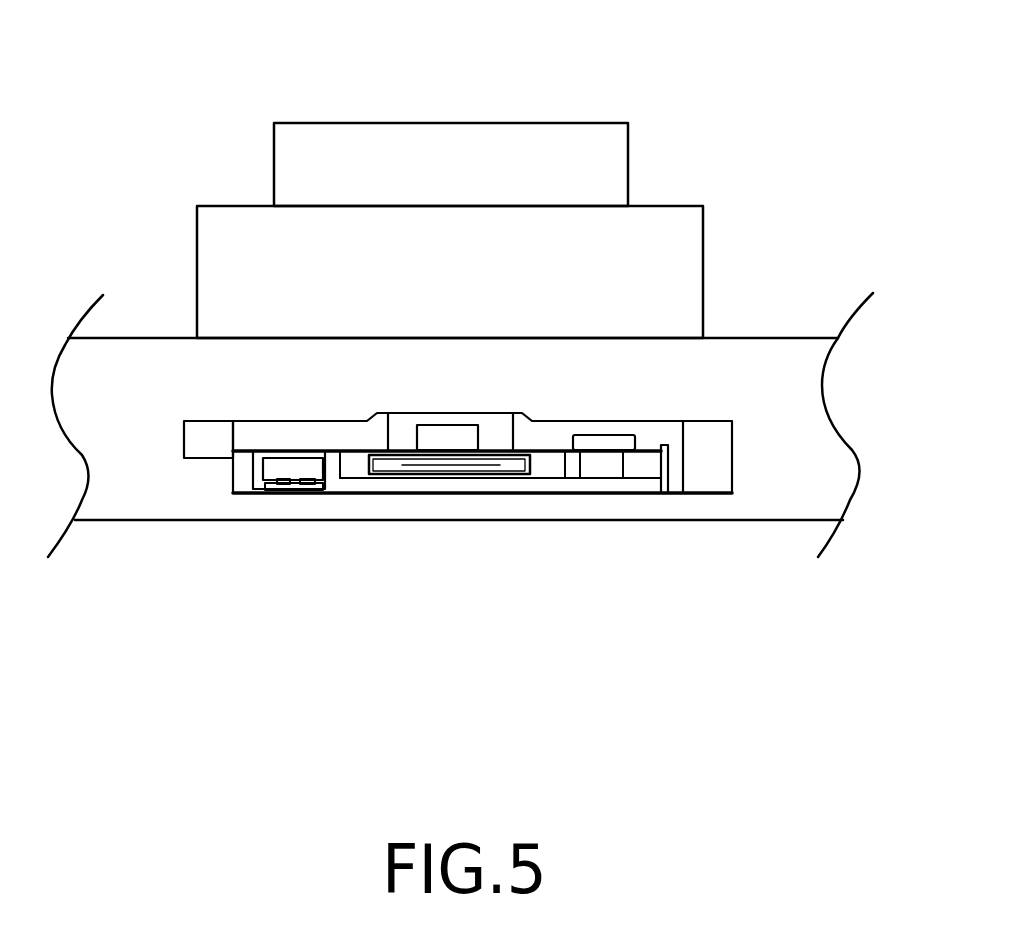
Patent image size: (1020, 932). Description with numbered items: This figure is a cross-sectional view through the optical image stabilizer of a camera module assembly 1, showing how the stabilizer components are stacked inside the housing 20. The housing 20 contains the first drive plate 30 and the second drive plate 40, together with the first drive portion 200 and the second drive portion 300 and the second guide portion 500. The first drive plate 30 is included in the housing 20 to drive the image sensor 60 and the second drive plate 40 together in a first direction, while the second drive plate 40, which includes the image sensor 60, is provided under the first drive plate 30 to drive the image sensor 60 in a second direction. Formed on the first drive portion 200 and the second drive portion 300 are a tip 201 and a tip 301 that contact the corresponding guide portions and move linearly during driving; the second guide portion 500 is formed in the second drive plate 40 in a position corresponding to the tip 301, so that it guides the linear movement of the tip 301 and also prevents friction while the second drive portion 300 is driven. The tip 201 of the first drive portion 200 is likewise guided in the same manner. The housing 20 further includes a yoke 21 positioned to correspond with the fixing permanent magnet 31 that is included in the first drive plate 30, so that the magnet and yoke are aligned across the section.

The camera module assembly 1 is at (450, 138).
The first drive portion 200 is at (450, 432).
The yoke 21 is at (608, 433).
The second drive portion 300 is at (272, 463).
The second guide portion 500 is at (263, 493).
The tip 301 is at (297, 495).
The image sensor 60 is at (388, 463).
The second drive plate 40 is at (428, 487).
The tip 201 is at (458, 465).
The fixing permanent magnet 31 is at (612, 462).
The first drive plate 30 is at (645, 465).
The housing 20 is at (710, 467).